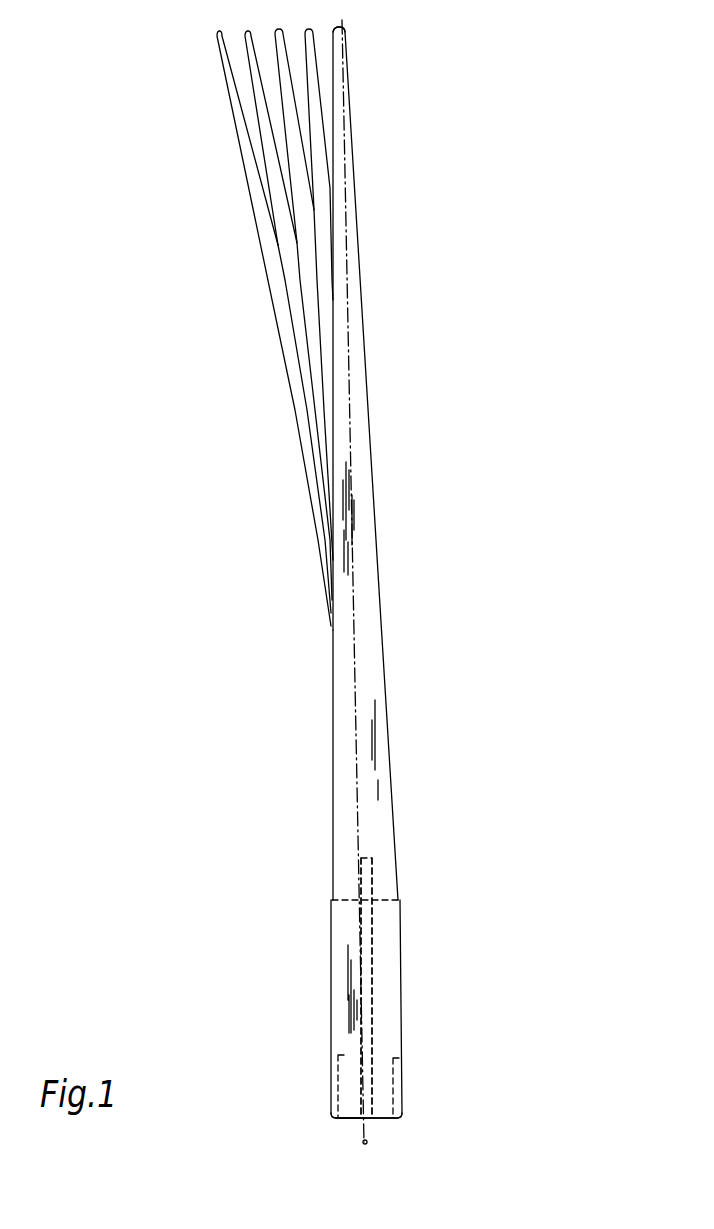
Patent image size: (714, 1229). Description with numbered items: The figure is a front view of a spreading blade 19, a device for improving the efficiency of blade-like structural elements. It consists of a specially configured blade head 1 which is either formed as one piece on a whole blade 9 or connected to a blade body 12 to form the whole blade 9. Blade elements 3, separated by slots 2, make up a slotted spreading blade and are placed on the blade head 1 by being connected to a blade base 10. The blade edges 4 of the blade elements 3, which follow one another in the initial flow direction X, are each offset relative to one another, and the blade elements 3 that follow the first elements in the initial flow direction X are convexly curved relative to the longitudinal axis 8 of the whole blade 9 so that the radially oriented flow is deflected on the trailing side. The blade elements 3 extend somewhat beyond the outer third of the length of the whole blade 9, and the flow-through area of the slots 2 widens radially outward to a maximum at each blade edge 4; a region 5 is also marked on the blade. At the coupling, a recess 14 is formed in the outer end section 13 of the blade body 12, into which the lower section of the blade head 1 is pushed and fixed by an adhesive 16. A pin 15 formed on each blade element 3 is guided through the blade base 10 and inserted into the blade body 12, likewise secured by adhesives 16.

The blade head 1 is at (506, 490).
The slots 2 is at (328, 90).
The blade elements 3 is at (343, 155).
The blade edges 4 is at (362, 25).
The region 5 is at (473, 410).
The longitudinal axis 8 is at (358, 665).
The whole blade 9 is at (362, 1143).
The blade base 10 is at (405, 973).
The blade body 12 is at (425, 1122).
The outer end section 13 is at (302, 1122).
The recess 14 is at (397, 1062).
The pin 15 is at (366, 880).
The adhesive 16 is at (372, 890).
The spreading blade 19 is at (437, 245).
The initial flow direction X is at (425, 340).